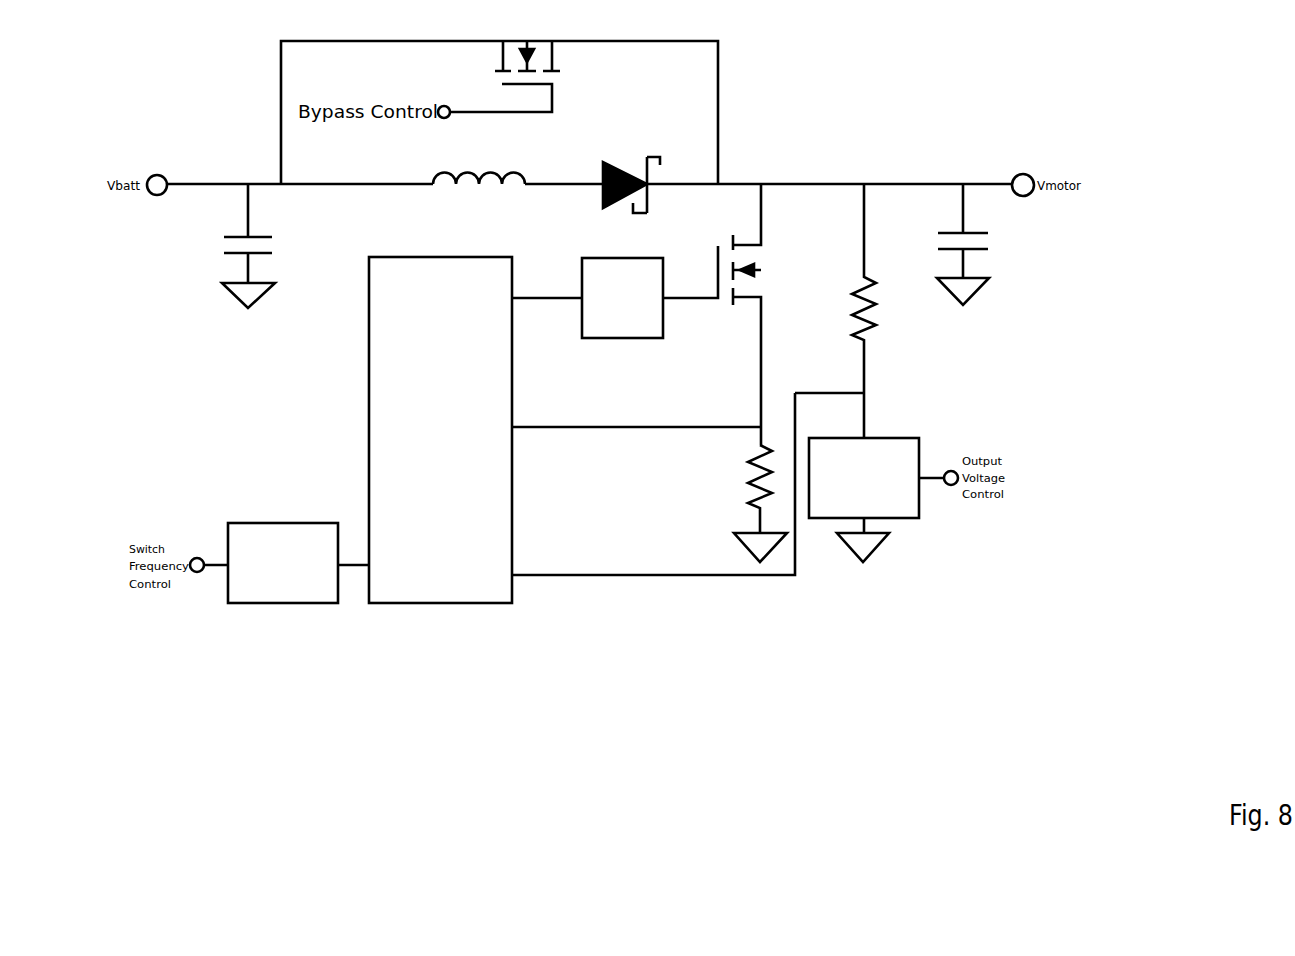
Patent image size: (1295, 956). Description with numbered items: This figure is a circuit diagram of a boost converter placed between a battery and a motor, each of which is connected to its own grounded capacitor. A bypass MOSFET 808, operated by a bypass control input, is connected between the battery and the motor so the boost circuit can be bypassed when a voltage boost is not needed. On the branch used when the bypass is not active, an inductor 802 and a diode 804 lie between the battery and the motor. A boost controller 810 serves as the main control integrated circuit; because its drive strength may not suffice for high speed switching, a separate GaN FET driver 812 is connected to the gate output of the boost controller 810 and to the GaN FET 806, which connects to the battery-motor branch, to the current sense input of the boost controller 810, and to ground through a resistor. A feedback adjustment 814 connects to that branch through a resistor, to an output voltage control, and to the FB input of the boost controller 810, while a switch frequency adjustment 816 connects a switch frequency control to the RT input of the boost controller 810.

The inductor 802 is at (479, 169).
The Schottky diode 804 is at (620, 211).
The GaN FET switch 806 is at (764, 263).
The bypass FET 808 is at (563, 63).
The boost controller 810 is at (440, 430).
The GaN FET driver 812 is at (604, 256).
The feedback adjustment 814 is at (904, 520).
The switch frequency adjustment 816 is at (258, 521).